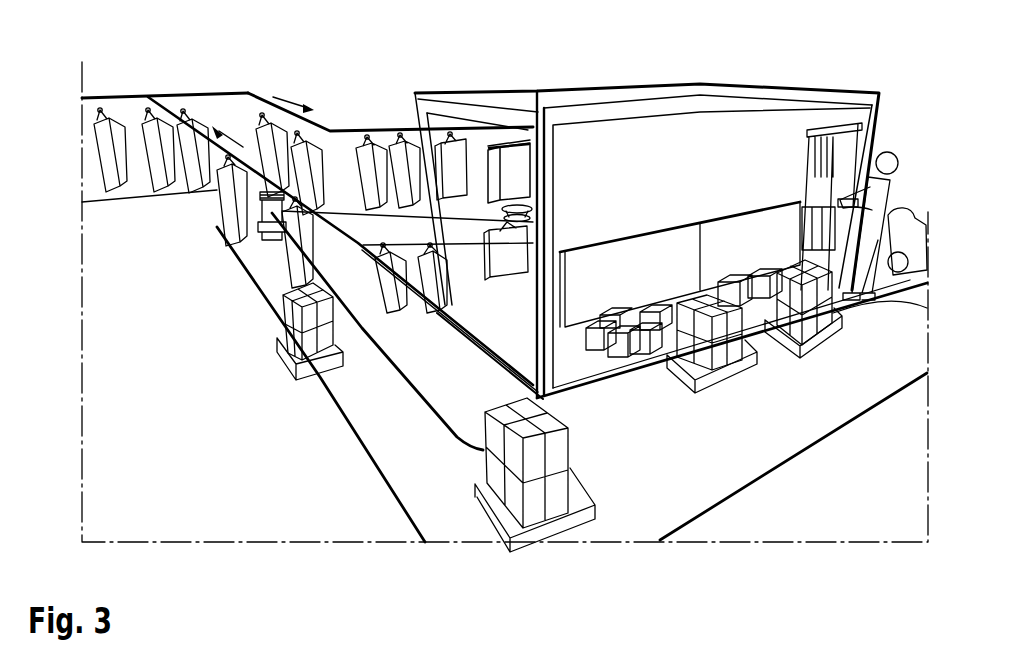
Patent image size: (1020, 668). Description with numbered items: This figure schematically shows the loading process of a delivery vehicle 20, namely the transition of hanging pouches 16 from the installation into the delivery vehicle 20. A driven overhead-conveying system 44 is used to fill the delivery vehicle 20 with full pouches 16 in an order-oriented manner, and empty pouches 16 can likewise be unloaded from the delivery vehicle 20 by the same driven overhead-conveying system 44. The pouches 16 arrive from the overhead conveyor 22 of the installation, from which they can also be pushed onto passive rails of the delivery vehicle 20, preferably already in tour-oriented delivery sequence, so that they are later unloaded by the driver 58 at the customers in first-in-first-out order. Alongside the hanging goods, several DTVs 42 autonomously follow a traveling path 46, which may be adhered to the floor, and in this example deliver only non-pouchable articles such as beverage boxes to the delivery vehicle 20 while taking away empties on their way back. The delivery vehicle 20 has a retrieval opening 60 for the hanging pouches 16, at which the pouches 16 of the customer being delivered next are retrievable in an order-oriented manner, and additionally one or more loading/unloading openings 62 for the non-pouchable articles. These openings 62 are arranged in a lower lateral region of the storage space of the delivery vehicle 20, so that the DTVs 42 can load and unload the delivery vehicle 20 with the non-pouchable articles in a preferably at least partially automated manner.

The pouches 16 is at (230, 232).
The delivery vehicle 20 is at (562, 84).
The overhead conveyor 22 is at (117, 90).
The DTV 42 is at (282, 357).
The driven overhead-conveying system 44 is at (221, 92).
The traveling path 46 is at (348, 418).
The driver 58 is at (897, 187).
The retrieval opening 60 is at (846, 118).
The loading/unloading openings 62 is at (578, 374).